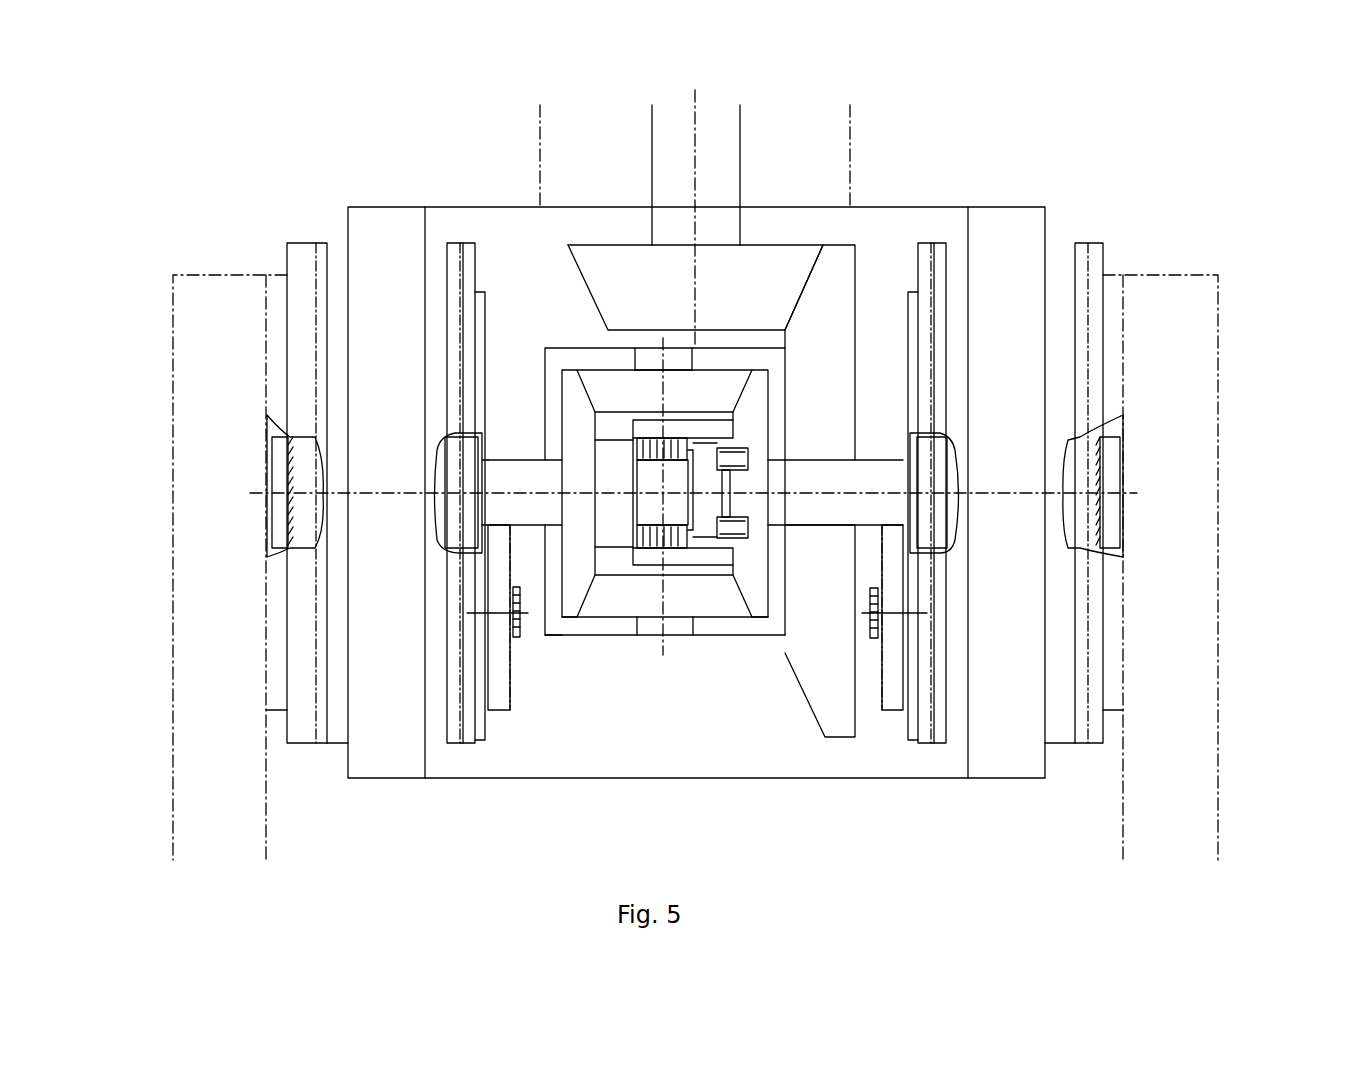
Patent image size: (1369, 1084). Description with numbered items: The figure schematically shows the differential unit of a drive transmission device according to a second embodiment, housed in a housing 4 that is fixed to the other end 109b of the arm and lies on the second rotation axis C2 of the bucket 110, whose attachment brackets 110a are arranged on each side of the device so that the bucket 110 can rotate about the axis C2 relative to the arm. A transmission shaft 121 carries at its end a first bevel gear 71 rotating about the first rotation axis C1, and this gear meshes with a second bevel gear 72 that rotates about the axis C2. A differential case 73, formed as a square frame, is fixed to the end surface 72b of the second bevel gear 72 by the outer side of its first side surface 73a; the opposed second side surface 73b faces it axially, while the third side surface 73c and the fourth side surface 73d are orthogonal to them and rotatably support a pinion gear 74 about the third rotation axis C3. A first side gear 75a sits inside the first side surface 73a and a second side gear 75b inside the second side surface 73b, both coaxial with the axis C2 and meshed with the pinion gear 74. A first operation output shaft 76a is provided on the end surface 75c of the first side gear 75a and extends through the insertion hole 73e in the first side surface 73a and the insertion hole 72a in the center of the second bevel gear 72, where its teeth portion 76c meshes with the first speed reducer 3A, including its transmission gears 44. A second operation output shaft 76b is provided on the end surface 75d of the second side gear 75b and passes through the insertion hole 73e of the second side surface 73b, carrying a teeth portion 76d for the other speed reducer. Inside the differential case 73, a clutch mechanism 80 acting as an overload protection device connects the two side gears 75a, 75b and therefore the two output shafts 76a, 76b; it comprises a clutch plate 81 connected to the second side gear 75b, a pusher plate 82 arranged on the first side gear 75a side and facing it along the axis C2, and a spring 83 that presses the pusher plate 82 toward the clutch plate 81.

The first speed reducer 3A is at (1091, 242).
The housing 4 is at (905, 200).
The transmission gear 44 is at (503, 712).
The first bevel gear 71 is at (783, 257).
The second bevel gear 72 is at (845, 322).
The insertion hole 72a is at (803, 460).
The end surface 72b is at (830, 565).
The differential case 73 is at (633, 612).
The first side surface 73a is at (760, 605).
The second side surface 73b is at (575, 348).
The third side surface 73c is at (737, 348).
The fourth side surface 73d is at (588, 635).
The insertion hole 73e is at (520, 520).
The pinion gear 74 is at (618, 382).
The first side gear 75a is at (748, 540).
The second side gear 75b is at (567, 635).
The end surface 75c is at (875, 618).
The end surface 75d is at (520, 585).
The first operation output shaft 76a is at (845, 460).
The second operation output shaft 76b is at (515, 456).
The teeth portion 76c is at (958, 535).
The teeth portion 76d is at (503, 542).
The clutch mechanism 80 is at (651, 580).
The clutch plate 81 is at (616, 633).
The pusher plate 82 is at (687, 557).
The spring 83 is at (738, 545).
The other end of the arm 109b is at (538, 190).
The bucket 110 is at (1233, 668).
The attachment bracket 110a is at (173, 372).
The transmission shaft 121 is at (742, 160).
The first rotation axis C1 is at (699, 203).
The second rotation axis C2 is at (1137, 493).
The third rotation axis C3 is at (663, 655).